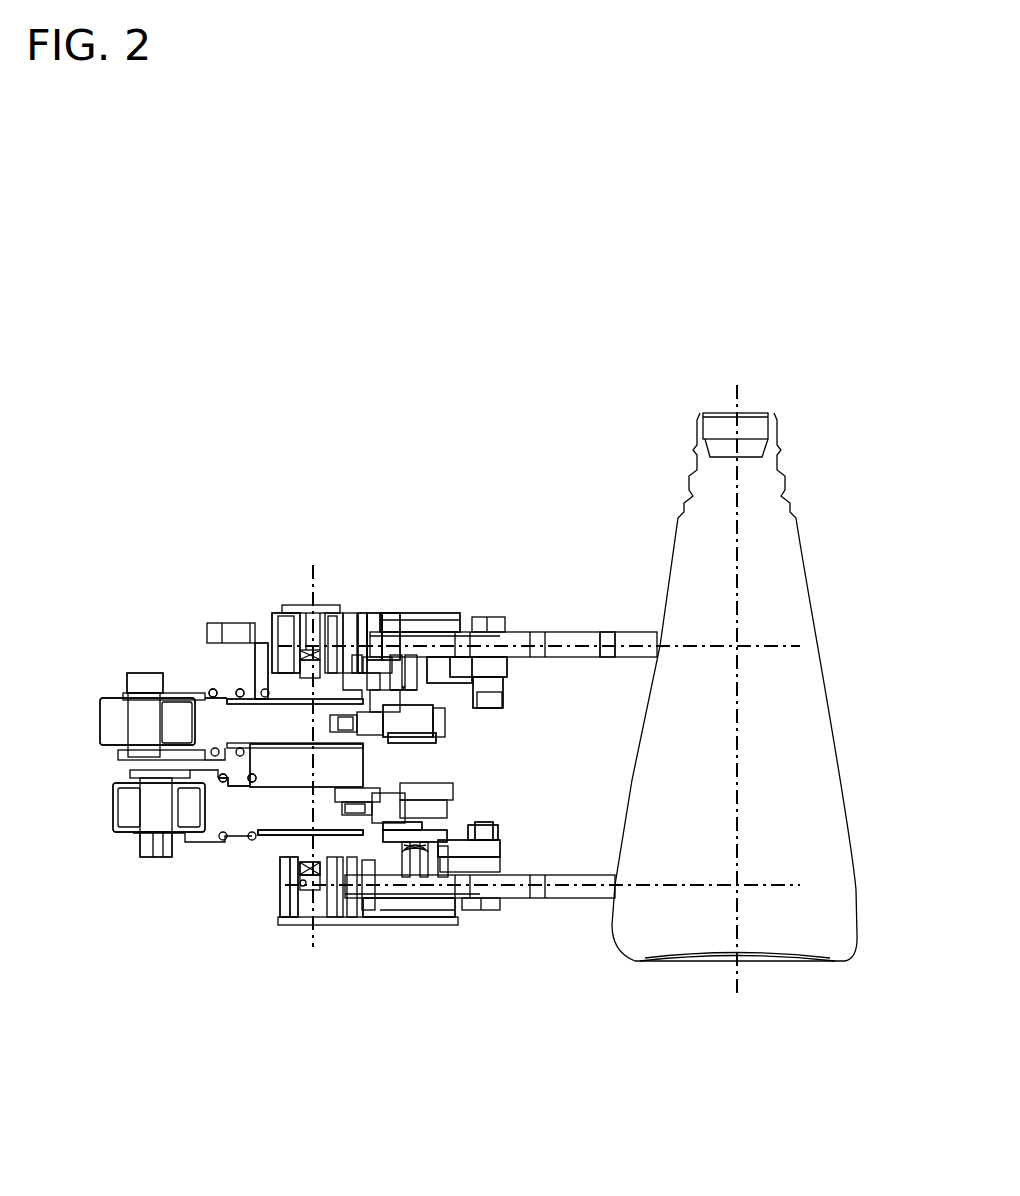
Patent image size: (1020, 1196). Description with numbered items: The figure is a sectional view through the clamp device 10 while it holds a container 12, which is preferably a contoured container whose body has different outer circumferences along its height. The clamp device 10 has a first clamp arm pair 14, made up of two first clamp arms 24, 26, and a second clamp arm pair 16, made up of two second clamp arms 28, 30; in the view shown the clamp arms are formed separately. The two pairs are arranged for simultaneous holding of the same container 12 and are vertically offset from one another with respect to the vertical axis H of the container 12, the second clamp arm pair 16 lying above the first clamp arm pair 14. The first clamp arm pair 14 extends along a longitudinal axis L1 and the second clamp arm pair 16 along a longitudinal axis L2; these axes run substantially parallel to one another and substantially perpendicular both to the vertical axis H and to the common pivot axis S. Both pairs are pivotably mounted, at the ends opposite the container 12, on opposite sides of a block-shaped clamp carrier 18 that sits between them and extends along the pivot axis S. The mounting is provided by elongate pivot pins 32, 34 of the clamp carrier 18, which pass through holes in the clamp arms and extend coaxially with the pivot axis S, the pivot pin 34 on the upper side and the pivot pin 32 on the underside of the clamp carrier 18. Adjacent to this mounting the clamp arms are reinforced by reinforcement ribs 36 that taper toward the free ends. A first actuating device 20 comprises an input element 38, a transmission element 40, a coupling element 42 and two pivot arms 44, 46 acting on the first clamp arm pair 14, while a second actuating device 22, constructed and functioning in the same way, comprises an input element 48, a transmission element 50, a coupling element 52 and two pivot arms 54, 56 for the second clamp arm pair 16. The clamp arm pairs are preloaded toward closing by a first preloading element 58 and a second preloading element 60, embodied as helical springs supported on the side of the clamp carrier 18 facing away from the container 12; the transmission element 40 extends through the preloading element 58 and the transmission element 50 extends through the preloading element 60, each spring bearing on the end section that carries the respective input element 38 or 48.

The clamp device 10 is at (118, 430).
The container 12 is at (667, 403).
The first clamp arm pair 14 is at (600, 940).
The second clamp arm pair 16 is at (612, 598).
The clamp carrier 18 is at (330, 840).
The first actuating device 20 is at (126, 879).
The second actuating device 22 is at (133, 652).
The first clamp arm 24 is at (290, 903).
The first clamp arm 26 is at (580, 900).
The second clamp arm 28 is at (283, 627).
The second clamp arm 30 is at (618, 637).
The pivot pin 32 is at (300, 885).
The pivot pin 34 is at (328, 625).
The reinforcement ribs 36 is at (398, 620).
The input element 38 is at (125, 805).
The transmission element 40 is at (298, 812).
The coupling element 42 is at (430, 830).
The pivot arm 44 is at (455, 863).
The pivot arm 46 is at (488, 850).
The input element 48 is at (112, 718).
The transmission element 50 is at (268, 716).
The coupling element 52 is at (400, 745).
The pivot arm 54 is at (443, 685).
The pivot arm 56 is at (500, 667).
The first preloading element 58 is at (245, 836).
The second preloading element 60 is at (235, 690).
The pivot axis S is at (310, 950).
The vertical axis H is at (737, 967).
The longitudinal axis L1 is at (790, 885).
The longitudinal axis L2 is at (790, 646).